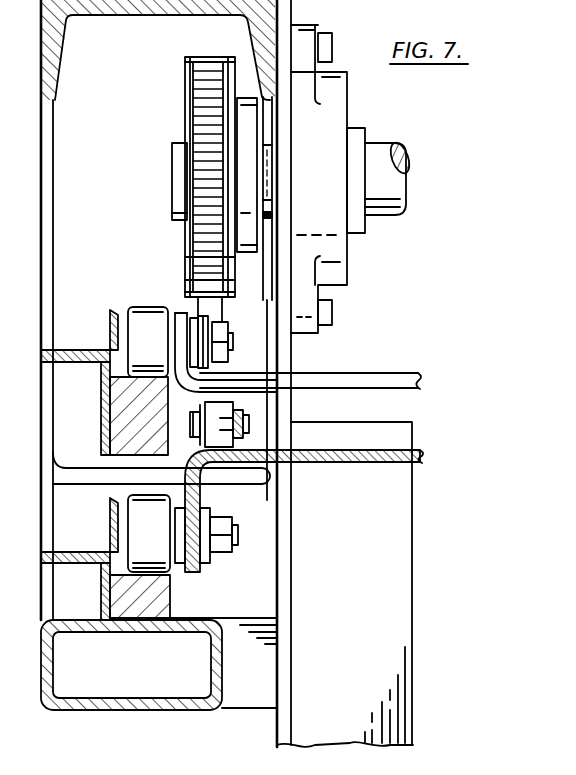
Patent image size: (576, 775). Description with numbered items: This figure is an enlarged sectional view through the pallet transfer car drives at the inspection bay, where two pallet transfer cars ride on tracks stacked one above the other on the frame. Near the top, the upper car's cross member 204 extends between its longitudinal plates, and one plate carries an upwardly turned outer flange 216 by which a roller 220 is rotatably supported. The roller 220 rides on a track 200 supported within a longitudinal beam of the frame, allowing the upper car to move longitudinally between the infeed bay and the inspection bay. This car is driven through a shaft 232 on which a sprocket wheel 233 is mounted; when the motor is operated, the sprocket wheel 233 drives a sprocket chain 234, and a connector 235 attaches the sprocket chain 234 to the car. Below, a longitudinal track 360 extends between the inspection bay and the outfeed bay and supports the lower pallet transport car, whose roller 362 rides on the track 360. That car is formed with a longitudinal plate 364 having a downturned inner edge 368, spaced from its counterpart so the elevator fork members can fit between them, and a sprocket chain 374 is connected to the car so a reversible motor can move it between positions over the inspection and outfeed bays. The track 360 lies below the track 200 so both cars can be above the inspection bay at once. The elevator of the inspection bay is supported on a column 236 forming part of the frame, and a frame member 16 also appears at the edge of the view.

The frame 16 is at (0, 255).
The track 200 is at (110, 400).
The cross member 204 is at (399, 350).
The upwardly turned outer flange 216 is at (190, 312).
The roller 220 is at (140, 306).
The shaft 232 is at (402, 178).
The sprocket wheel 233 is at (200, 122).
The sprocket chain 234 is at (186, 63).
The connector 235 is at (216, 312).
The column 236 is at (400, 632).
The longitudinal track 360 is at (165, 597).
The roller 362 is at (142, 512).
The longitudinal plate 364 is at (362, 461).
The downturned inner edge 368 is at (199, 574).
The sprocket chain 374 is at (244, 412).